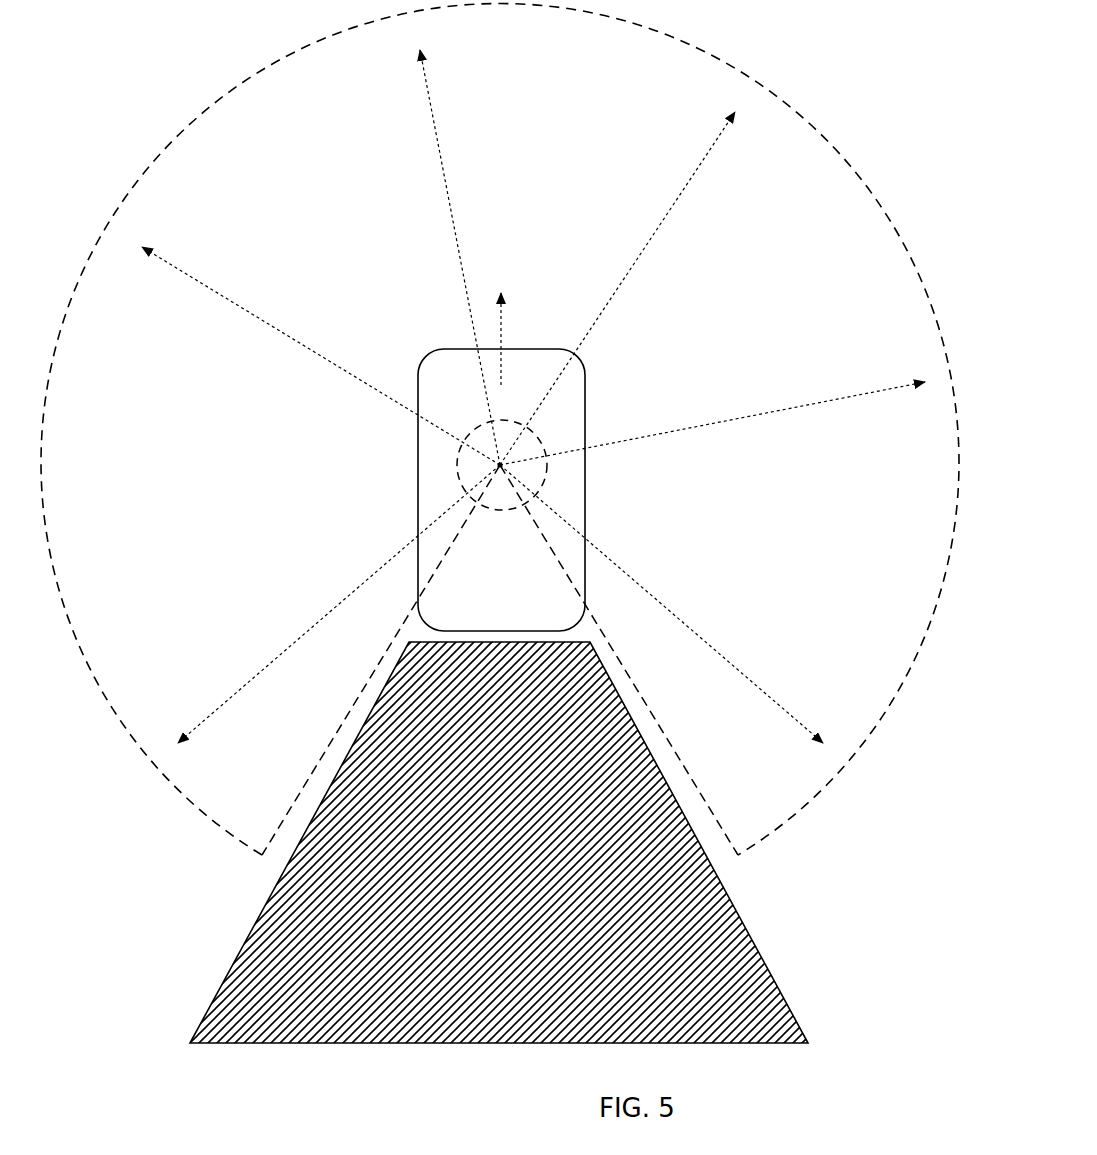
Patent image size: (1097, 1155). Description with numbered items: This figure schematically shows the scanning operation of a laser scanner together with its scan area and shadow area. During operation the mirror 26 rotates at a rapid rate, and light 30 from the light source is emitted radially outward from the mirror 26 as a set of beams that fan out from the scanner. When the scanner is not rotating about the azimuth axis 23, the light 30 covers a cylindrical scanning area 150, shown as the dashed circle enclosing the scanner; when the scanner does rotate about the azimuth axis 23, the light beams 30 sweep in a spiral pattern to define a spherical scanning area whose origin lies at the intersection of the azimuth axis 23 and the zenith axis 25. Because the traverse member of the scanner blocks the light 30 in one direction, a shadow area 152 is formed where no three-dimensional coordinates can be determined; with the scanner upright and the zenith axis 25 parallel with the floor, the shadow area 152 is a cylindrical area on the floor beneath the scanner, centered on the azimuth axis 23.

The cylindrical scanning area 150 is at (828, 137).
The shadow area 152 is at (425, 1044).
The light 30 is at (440, 168).
The azimuth axis 23 is at (503, 327).
The zenith axis 25 is at (503, 463).
The mirror 26 is at (467, 433).